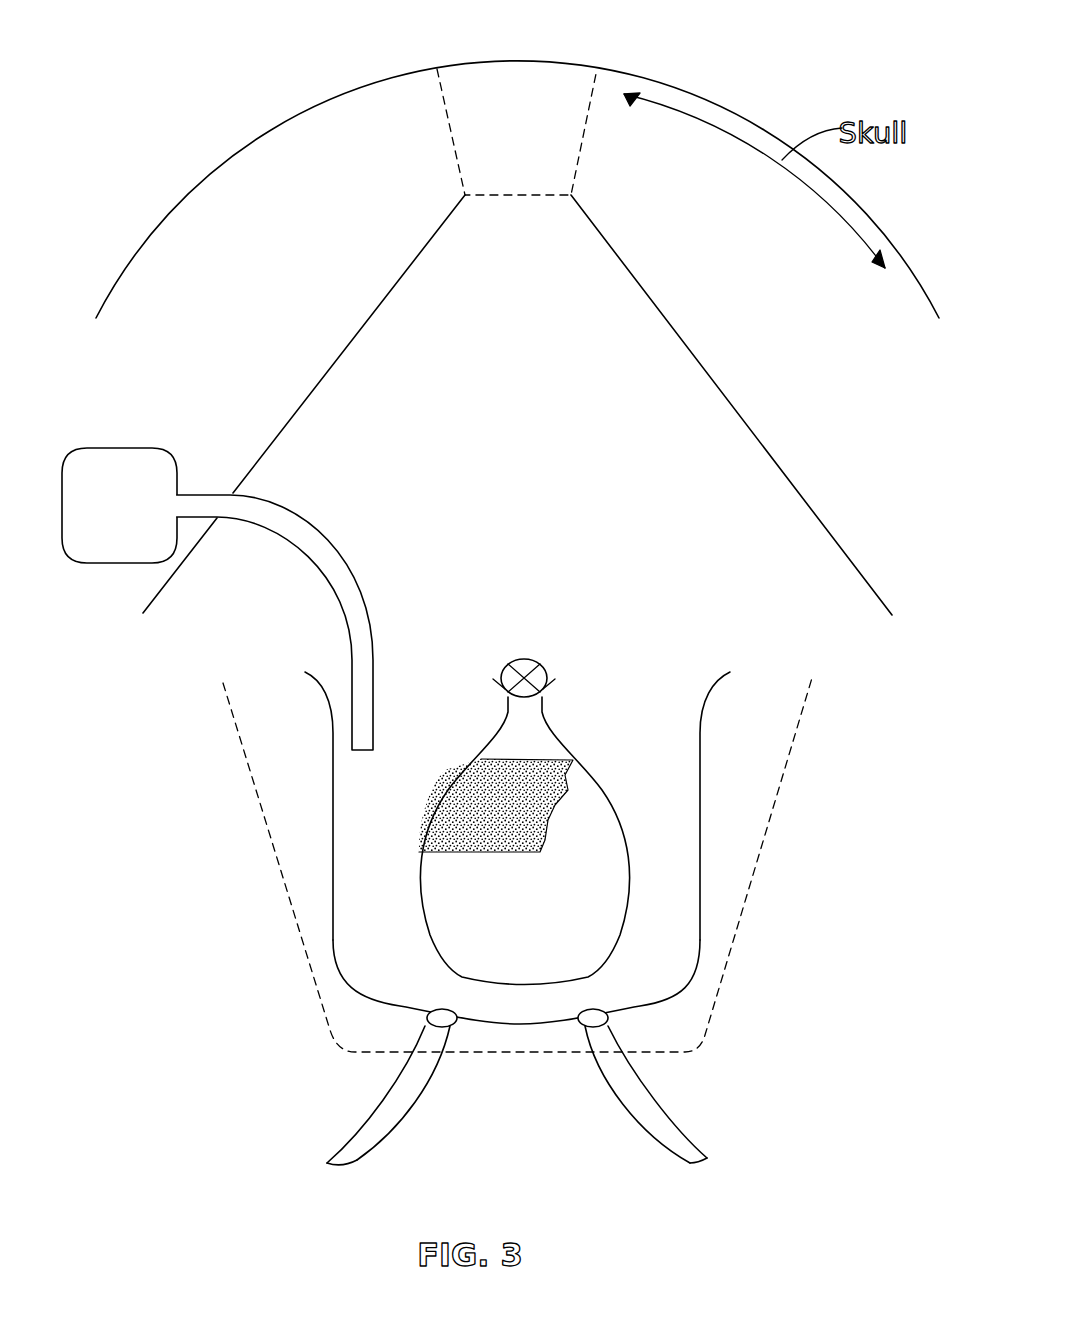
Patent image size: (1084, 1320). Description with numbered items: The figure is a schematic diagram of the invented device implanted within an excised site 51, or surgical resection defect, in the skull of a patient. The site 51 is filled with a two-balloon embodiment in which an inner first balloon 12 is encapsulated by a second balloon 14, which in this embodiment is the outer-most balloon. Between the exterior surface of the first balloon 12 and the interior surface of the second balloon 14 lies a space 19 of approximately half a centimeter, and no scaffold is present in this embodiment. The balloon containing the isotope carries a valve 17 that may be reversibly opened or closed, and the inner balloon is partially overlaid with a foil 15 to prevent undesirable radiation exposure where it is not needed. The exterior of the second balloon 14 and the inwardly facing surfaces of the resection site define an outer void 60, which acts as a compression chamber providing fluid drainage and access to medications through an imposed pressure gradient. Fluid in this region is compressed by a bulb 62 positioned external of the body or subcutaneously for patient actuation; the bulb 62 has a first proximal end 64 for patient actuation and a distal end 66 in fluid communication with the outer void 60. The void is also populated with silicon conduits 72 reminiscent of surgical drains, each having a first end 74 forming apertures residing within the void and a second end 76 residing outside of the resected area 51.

The first balloon 12 is at (460, 975).
The second balloon 14 is at (700, 950).
The foil 15 is at (507, 830).
The valve 17 is at (525, 655).
The space 19 is at (440, 755).
The excised site 51 is at (557, 88).
The outer void 60 is at (315, 848).
The bulb 62 is at (102, 522).
The first proximal end 64 is at (119, 525).
The distal end 66 is at (363, 755).
The silicon conduits 72 is at (385, 1103).
The first end 74 is at (457, 1022).
The second end 76 is at (357, 1160).